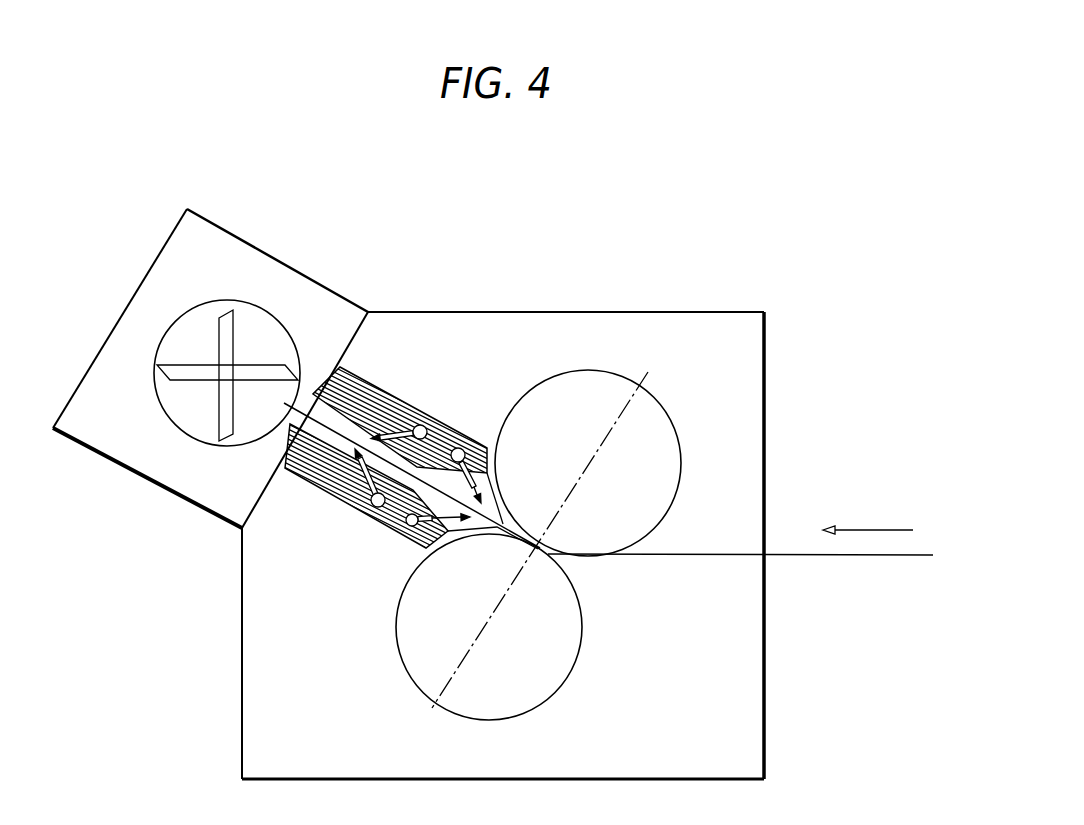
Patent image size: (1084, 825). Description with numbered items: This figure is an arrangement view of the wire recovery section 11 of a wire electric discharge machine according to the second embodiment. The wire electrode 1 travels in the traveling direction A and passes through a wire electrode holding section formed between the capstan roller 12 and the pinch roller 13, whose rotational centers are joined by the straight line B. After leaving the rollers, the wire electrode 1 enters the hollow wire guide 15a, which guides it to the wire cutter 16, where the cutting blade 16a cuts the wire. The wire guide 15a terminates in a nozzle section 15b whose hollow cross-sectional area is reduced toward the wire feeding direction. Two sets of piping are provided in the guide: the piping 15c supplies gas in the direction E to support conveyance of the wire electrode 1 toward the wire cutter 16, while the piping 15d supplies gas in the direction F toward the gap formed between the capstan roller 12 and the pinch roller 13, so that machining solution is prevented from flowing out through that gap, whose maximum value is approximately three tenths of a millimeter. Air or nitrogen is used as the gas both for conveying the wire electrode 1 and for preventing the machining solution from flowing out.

The wire electrode 1 is at (822, 560).
The wire recovery section 11 is at (705, 747).
The capstan roller 12 is at (487, 700).
The pinch roller 13 is at (667, 444).
The hollow wire guide 15a is at (390, 397).
The nozzle section 15b is at (378, 517).
The piping for supplying gas for conveying the wire electrode 15c is at (428, 422).
The piping for supplying gas for preventing machining solution from flowing out 15d is at (472, 440).
The wire cutter 16 is at (172, 260).
The cutting blade 16a is at (231, 333).
The traveling direction of the wire electrode A is at (868, 516).
The straight line connecting the rotational centers of the capstan roller and pinch B is at (648, 372).
The direction of supplying gas for conveying the wire electrode E is at (345, 498).
The direction of supplying gas for preventing machining solution from flowing out F is at (405, 535).